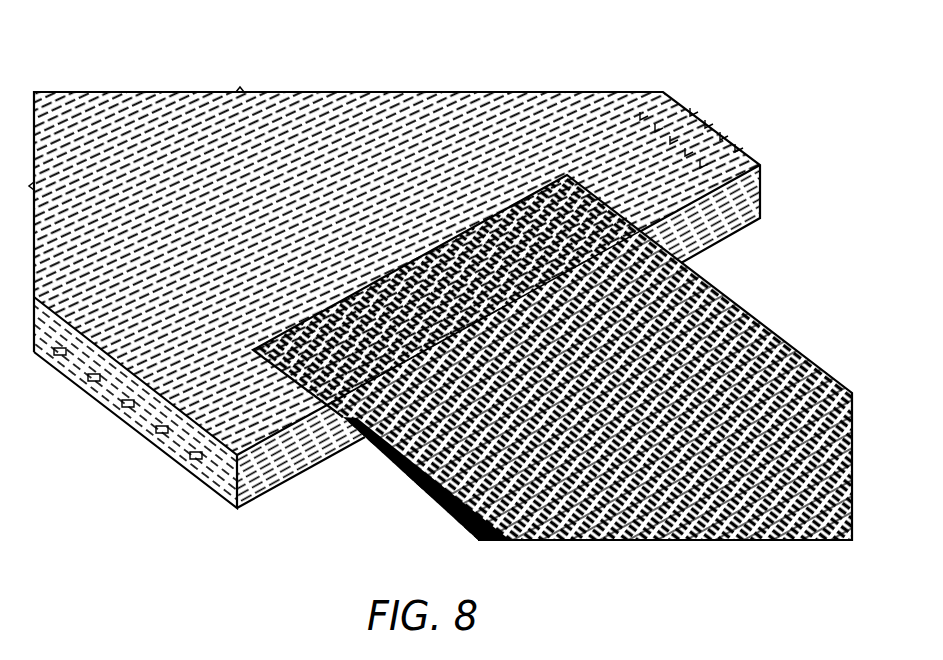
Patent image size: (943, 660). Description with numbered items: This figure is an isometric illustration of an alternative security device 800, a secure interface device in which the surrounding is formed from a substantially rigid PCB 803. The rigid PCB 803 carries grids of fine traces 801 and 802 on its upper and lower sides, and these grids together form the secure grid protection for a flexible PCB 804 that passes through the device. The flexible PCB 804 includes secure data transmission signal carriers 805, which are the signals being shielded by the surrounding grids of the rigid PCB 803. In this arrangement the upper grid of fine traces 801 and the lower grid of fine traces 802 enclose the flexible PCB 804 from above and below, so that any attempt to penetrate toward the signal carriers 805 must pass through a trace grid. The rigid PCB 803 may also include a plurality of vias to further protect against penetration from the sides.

The security device 800 is at (181, 64).
The grid of fine traces 801 is at (737, 167).
The grid of fine traces 802 is at (745, 207).
The rigid PCB 803 is at (93, 378).
The flexible PCB 804 is at (410, 490).
The secure data transmission signal carriers 805 is at (507, 467).